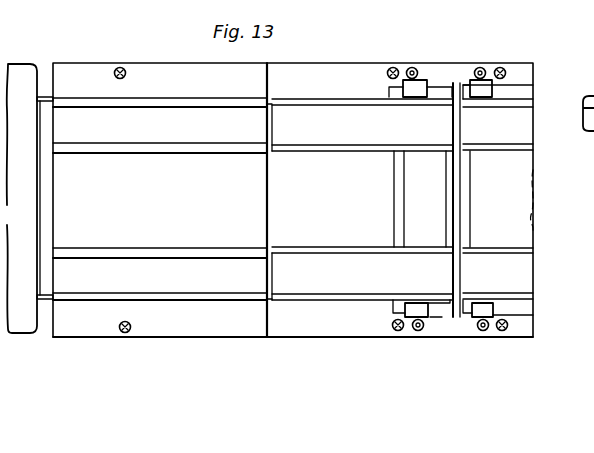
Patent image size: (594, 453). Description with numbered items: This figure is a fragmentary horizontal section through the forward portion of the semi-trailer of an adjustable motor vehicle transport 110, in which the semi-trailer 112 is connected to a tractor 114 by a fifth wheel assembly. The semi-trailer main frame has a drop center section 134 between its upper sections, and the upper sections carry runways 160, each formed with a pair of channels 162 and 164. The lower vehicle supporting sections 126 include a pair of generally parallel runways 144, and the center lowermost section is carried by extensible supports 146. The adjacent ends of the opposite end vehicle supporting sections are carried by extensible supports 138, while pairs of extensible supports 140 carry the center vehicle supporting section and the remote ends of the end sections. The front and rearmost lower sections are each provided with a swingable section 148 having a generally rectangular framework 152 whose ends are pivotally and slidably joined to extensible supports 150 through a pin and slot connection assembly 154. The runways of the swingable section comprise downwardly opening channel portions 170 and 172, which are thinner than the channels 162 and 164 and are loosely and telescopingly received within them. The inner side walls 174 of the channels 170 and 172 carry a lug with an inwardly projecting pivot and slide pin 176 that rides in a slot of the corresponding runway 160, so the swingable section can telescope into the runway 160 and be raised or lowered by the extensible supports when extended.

The adjustable motor vehicle transport 110 is at (55, 61).
The semi-trailer 112 is at (70, 340).
The tractor 114 is at (13, 62).
The lower vehicle supporting section 126 is at (468, 240).
The drop center section 134 is at (467, 0).
The extensible support 138 is at (390, 67).
The extensible support 140 is at (122, 67).
The runway 144 is at (520, 118).
The extensible support 146 is at (482, 67).
The swingable section 148 is at (395, 181).
The extensible support 150 is at (414, 68).
The rectangular framework 152 is at (396, 218).
The pin and slot connection assembly 154 is at (436, 321).
The runway 160 is at (163, 106).
The channel 162 is at (74, 99).
The channel 164 is at (160, 153).
The downwardly opening channel portion 170 is at (317, 151).
The downwardly opening channel portion 172 is at (292, 100).
The inner side wall 174 is at (374, 148).
The pivot and slide pin 176 is at (262, 140).